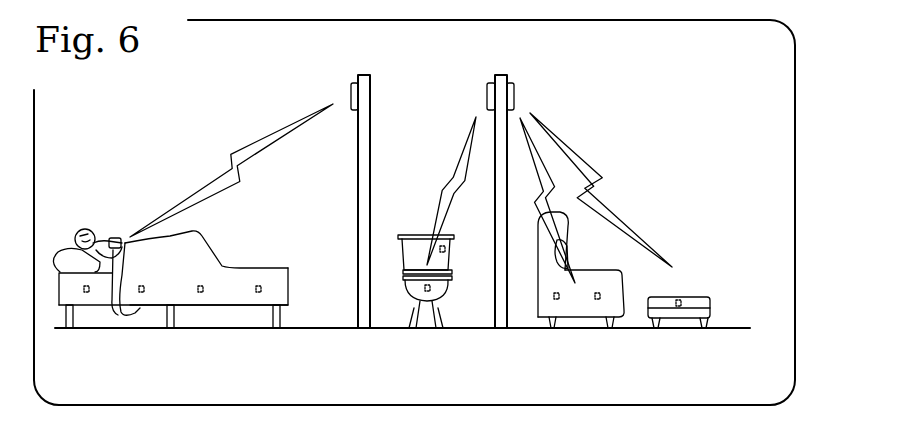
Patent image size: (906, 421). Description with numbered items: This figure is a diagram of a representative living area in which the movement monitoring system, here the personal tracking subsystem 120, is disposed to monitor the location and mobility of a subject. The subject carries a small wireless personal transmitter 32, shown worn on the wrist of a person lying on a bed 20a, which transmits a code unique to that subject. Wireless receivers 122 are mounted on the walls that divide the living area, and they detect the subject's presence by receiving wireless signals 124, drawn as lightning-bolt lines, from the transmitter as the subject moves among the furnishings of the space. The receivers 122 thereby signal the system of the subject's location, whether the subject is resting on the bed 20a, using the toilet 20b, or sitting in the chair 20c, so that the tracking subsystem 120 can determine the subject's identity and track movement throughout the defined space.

The tracking subsystem 120 is at (620, 87).
The receiver unit 122 is at (350, 95).
The wireless signal 124 is at (226, 170).
The bed 20a is at (292, 284).
The toilet 20b is at (452, 281).
The chair 20c is at (606, 268).
The wearable sensor 32 is at (118, 240).